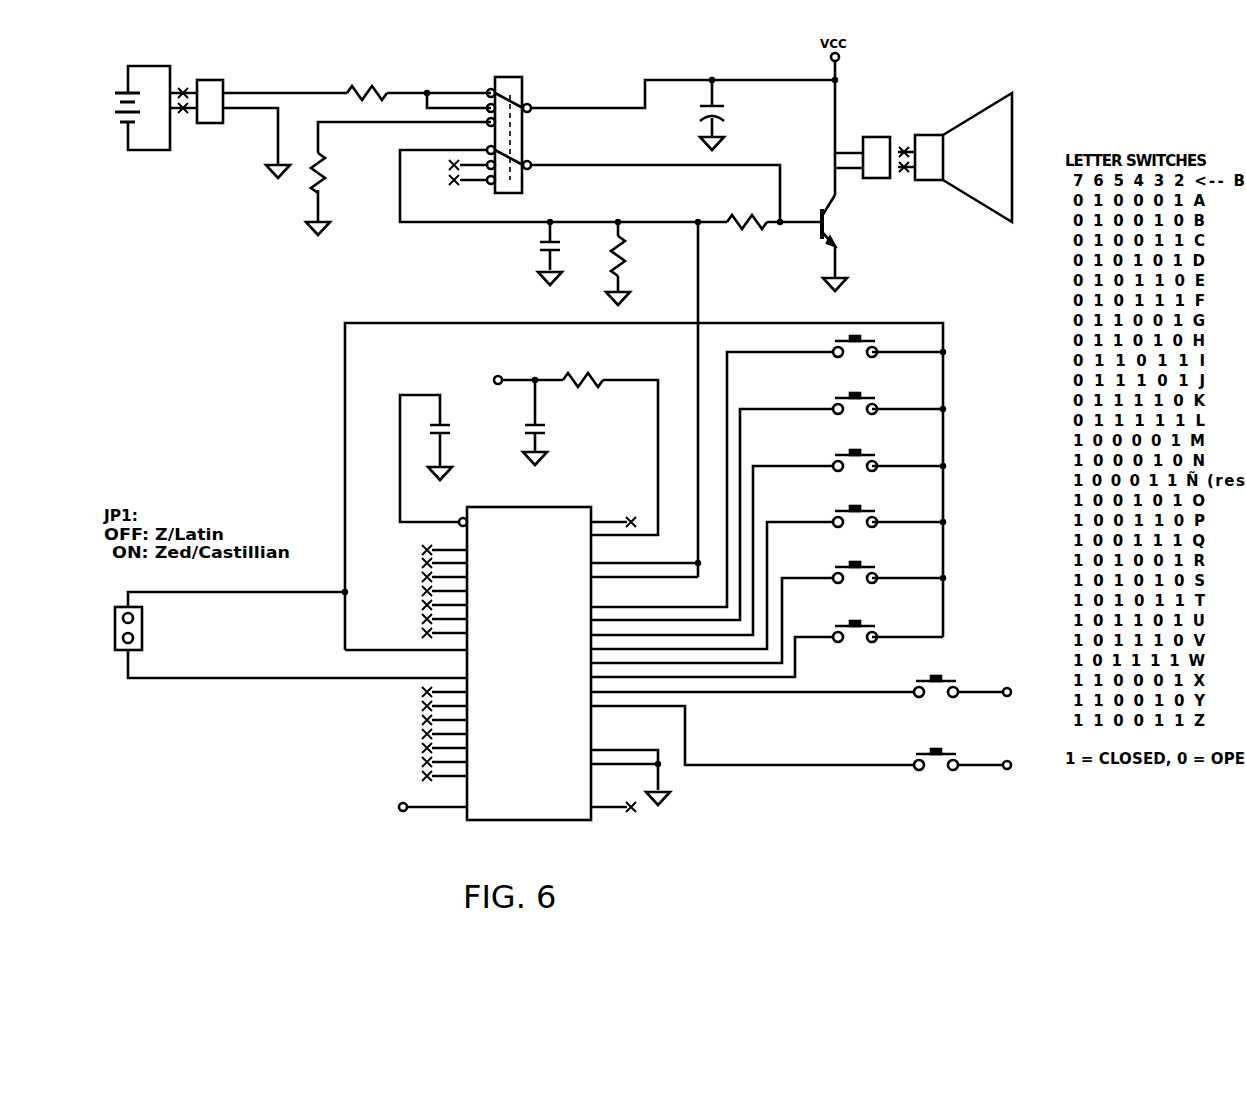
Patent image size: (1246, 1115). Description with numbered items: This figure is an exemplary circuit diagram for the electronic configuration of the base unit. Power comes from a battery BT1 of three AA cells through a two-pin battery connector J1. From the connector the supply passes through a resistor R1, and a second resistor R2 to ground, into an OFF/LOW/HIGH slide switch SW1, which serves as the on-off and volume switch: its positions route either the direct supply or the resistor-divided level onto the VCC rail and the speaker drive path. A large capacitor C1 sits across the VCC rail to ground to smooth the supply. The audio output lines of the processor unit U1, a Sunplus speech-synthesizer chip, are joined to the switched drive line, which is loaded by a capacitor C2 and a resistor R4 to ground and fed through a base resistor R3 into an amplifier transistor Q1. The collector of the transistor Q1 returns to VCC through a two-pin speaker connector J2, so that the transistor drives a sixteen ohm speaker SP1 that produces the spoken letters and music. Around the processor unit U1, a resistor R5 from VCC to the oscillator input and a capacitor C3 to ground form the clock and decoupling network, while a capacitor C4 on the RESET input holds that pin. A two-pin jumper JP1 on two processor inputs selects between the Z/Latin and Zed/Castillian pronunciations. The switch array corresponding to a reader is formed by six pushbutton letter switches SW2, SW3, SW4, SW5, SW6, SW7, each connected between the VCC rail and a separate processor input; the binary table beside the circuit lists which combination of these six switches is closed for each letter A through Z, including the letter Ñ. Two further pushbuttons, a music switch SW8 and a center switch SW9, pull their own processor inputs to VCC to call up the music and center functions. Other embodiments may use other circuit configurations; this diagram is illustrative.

The battery BT1 is at (120, 108).
The battery connector J1 is at (197, 101).
The resistor R1 is at (417, 93).
The resistor R2 is at (398, 178).
The OFF/LOW/HIGH switch SW1 is at (509, 124).
The capacitor C1 is at (734, 115).
The capacitor C2 is at (566, 253).
The resistor R4 is at (642, 263).
The resistor R3 is at (772, 222).
The transistor Q1 is at (844, 238).
The speaker connector J2 is at (864, 157).
The speaker SP1 is at (955, 163).
The resistor R5 is at (560, 445).
The capacitor C3 is at (551, 422).
The capacitor C4 is at (442, 458).
The processor unit U1 is at (520, 664).
The jumper JP1 is at (291, 635).
The letter switch SW2 is at (768, 471).
The letter switch SW3 is at (768, 506).
The letter switch SW4 is at (768, 542).
The letter switch SW5 is at (768, 577).
The letter switch SW6 is at (768, 612).
The letter switch SW7 is at (767, 649).
The music switch SW8 is at (815, 686).
The center switch SW9 is at (815, 749).